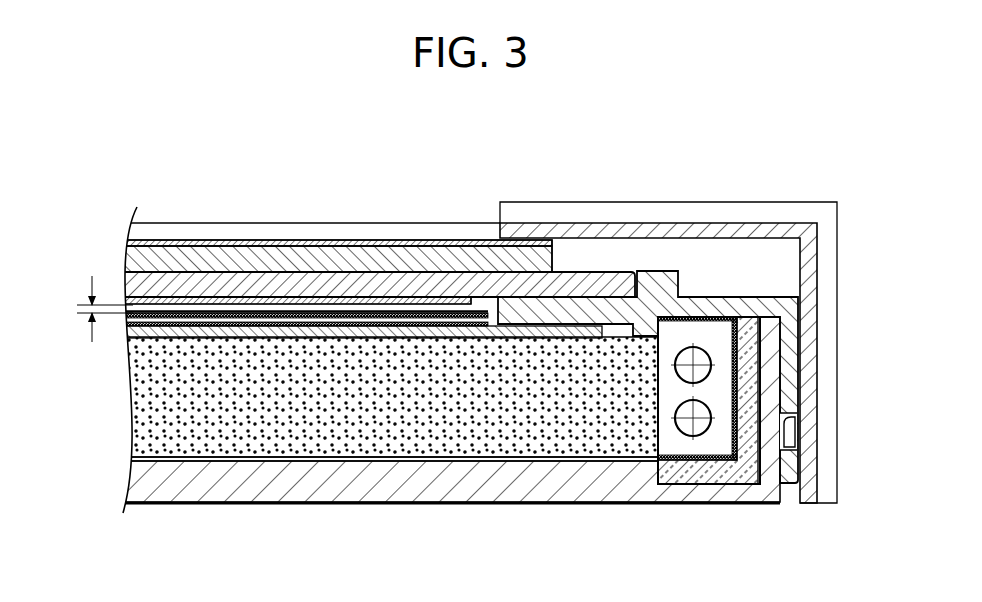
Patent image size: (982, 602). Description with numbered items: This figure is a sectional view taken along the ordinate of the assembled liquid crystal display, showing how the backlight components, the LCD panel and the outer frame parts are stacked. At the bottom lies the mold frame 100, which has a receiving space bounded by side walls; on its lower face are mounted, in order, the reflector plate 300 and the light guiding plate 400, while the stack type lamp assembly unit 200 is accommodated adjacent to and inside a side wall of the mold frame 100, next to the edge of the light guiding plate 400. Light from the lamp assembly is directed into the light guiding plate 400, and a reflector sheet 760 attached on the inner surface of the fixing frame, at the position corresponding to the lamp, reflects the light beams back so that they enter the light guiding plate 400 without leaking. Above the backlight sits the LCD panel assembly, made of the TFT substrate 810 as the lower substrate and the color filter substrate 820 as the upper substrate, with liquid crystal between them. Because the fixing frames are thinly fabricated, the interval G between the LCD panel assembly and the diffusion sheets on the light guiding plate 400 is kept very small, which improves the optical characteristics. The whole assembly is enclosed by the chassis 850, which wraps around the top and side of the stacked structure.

The mold frame 100 is at (413, 487).
The stack type lamp assembly unit 200 is at (677, 384).
The reflector plate 300 is at (284, 449).
The light guiding plate 400 is at (140, 418).
The reflector sheet 760 is at (757, 317).
The TFT substrate 810 is at (138, 295).
The color filter substrate 820 is at (138, 258).
The chassis 850 is at (817, 464).
The interval G is at (97, 317).